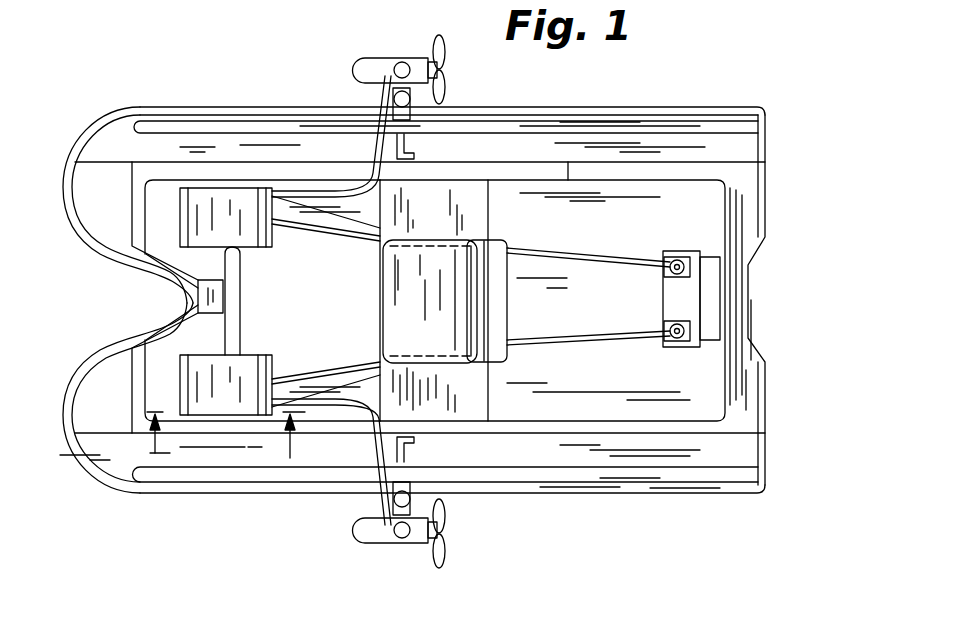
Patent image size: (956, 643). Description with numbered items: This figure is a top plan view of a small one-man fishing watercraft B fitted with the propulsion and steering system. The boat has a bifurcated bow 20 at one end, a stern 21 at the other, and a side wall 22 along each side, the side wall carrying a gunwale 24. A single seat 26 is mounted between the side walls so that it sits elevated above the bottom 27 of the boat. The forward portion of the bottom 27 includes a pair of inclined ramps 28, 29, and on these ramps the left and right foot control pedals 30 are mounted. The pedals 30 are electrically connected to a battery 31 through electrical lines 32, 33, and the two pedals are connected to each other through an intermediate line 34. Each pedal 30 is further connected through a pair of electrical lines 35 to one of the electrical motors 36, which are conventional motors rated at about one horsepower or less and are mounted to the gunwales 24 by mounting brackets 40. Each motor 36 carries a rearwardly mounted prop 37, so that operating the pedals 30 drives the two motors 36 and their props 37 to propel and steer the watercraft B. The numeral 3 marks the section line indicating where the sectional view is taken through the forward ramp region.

The bifurcated bow 20 is at (112, 265).
The stern 21 is at (768, 222).
The side wall 22 is at (698, 500).
The gunwale 24 is at (232, 484).
The single seat 26 is at (400, 281).
The bottom 27 is at (645, 226).
The inclined ramp 28 is at (163, 198).
The inclined ramp 29 is at (160, 383).
The foot control pedal 30 is at (260, 158).
The battery 31 is at (662, 290).
The electrical line 32 is at (565, 233).
The electrical line 33 is at (563, 342).
The intermediate line 34 is at (247, 278).
The electrical lines 35 is at (323, 188).
The electrical motor 36 is at (378, 57).
The prop 37 is at (446, 54).
The mounting bracket 40 is at (374, 87).
The section line 3- 3 is at (220, 442).
The watercraft B is at (98, 486).